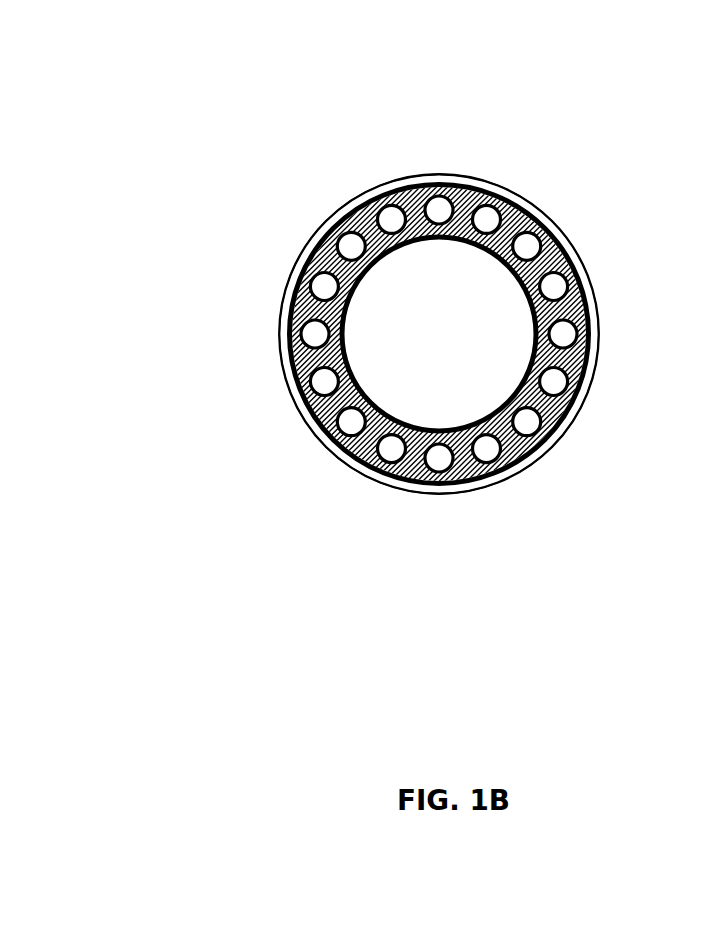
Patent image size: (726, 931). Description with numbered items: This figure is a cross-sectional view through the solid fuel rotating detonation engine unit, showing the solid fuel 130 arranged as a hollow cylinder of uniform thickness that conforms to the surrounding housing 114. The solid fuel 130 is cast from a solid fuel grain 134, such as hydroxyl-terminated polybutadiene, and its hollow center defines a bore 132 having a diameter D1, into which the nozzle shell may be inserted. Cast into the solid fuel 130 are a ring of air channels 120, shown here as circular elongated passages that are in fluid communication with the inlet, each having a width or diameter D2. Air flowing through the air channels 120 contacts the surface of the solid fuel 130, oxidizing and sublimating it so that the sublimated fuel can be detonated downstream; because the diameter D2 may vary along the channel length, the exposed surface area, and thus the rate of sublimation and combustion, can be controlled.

The housing 114 is at (278, 336).
The solid fuel grain 134 is at (312, 240).
The solid fuel 130 is at (410, 185).
The air channels 120 is at (487, 184).
The bore 132 is at (372, 350).
The diameter of the bore D1 is at (440, 241).
The diameter of the air channels D2 is at (561, 273).